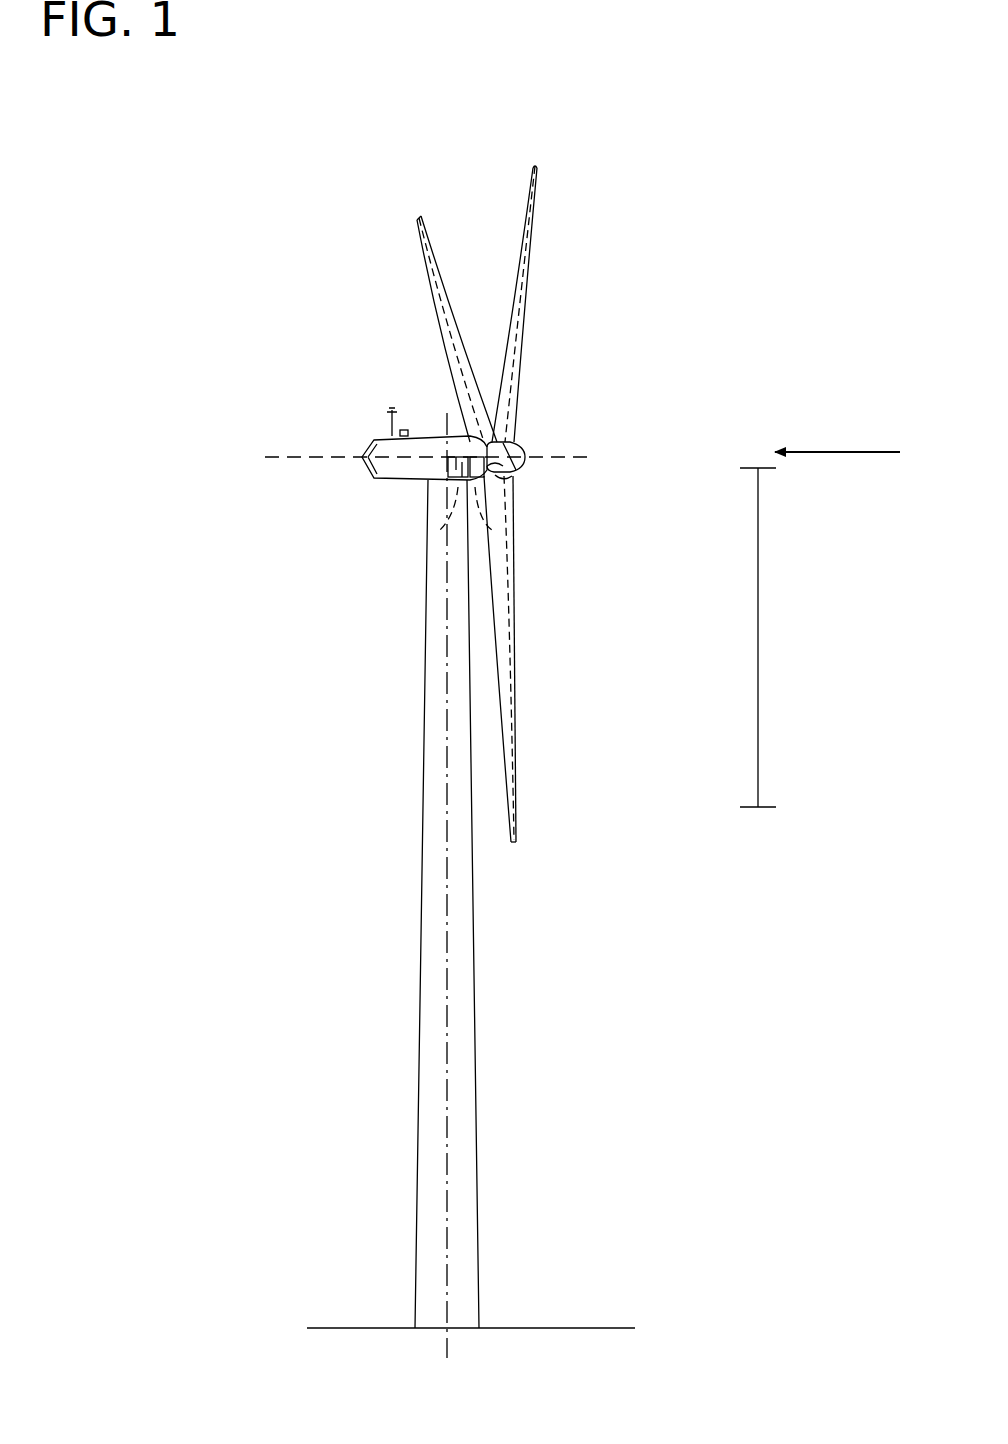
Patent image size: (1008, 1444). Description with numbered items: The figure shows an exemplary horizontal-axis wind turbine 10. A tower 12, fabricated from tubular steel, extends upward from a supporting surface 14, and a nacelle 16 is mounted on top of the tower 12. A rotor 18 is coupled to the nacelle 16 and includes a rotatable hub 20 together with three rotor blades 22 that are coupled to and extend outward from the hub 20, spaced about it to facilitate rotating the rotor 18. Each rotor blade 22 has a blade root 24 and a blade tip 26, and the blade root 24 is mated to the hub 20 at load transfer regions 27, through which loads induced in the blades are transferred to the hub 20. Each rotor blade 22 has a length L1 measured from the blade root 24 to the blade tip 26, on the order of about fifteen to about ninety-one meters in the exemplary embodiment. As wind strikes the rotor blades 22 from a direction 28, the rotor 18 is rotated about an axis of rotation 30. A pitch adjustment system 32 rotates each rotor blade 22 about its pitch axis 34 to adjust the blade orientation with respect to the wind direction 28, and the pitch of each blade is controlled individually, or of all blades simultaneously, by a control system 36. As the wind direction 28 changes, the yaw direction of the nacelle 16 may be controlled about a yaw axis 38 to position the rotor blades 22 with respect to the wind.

The wind turbine 10 is at (178, 226).
The tower 12 is at (418, 1077).
The supporting surface 14 is at (368, 1328).
The nacelle 16 is at (395, 482).
The rotor 18 is at (538, 348).
The rotatable hub 20 is at (515, 446).
The rotor blade 22 is at (442, 290).
The blade root 24 is at (540, 575).
The blade tip 26 is at (418, 218).
The load transfer regions 27 is at (503, 478).
The direction 28 is at (848, 452).
The axis of rotation 30 is at (590, 457).
The pitch adjustment system 32 is at (492, 530).
The pitch axis 34 is at (410, 218).
The control system 36 is at (440, 530).
The yaw axis 38 is at (449, 1010).
The length L1 is at (758, 645).